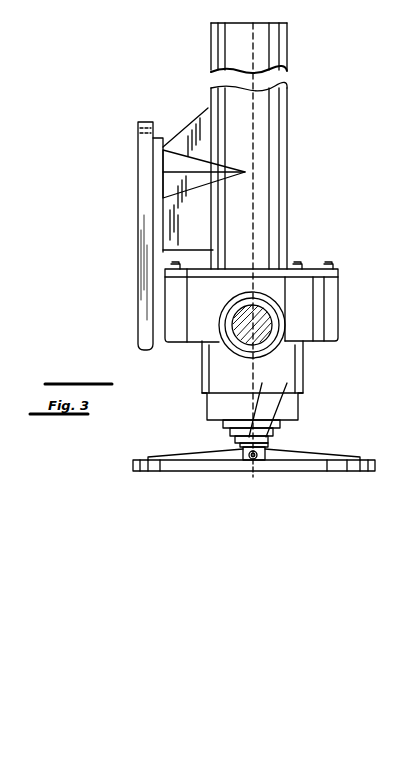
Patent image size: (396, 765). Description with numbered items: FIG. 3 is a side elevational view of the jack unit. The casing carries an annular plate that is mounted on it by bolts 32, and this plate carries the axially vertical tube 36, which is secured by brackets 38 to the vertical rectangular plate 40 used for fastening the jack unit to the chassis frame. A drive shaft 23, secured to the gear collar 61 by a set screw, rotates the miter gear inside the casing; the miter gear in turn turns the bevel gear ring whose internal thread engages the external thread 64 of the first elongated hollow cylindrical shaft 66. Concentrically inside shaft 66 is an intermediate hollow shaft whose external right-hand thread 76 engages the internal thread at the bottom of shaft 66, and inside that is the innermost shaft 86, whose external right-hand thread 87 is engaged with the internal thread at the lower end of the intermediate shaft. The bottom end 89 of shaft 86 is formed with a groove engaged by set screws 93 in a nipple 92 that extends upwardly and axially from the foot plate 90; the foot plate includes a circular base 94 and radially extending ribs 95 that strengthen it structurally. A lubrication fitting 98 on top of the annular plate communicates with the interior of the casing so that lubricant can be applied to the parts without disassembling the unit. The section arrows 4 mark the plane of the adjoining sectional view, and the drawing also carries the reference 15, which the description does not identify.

The section line 4- 4 is at (258, 78).
The spacer plate 15 is at (228, 431).
The drive shaft 23 is at (264, 310).
The bolts 32 is at (330, 265).
The axially vertical tube 36 is at (268, 143).
The brackets 38 is at (183, 138).
The vertical rectangular plate 40 is at (140, 310).
The gear collar 61 is at (276, 327).
The external thread 64 is at (237, 418).
The first elongated hollow cylindrical shaft 66 is at (283, 423).
The external right-hand thread 76 is at (260, 403).
The shaft 86 is at (273, 438).
The external right-hand thread 87 is at (282, 403).
The bottom end 89 is at (243, 448).
The foot plate 90 is at (317, 477).
The nipple 92 is at (268, 456).
The set screws 93 is at (241, 463).
The circular base 94 is at (192, 466).
The radially extending ribs 95 is at (332, 457).
The lubrication fitting 98 is at (297, 264).